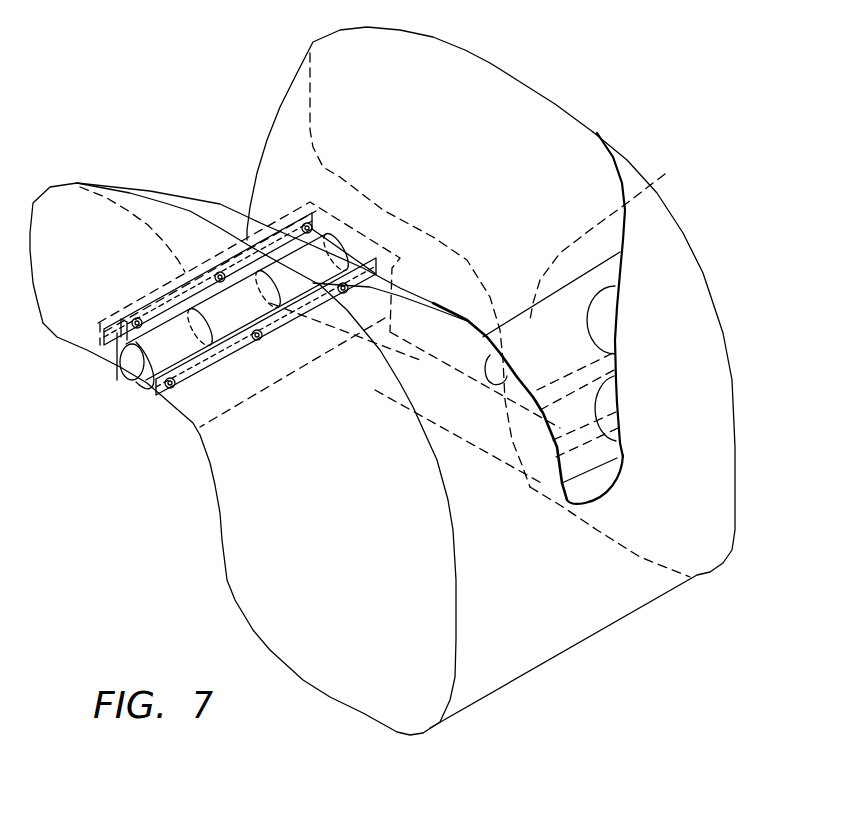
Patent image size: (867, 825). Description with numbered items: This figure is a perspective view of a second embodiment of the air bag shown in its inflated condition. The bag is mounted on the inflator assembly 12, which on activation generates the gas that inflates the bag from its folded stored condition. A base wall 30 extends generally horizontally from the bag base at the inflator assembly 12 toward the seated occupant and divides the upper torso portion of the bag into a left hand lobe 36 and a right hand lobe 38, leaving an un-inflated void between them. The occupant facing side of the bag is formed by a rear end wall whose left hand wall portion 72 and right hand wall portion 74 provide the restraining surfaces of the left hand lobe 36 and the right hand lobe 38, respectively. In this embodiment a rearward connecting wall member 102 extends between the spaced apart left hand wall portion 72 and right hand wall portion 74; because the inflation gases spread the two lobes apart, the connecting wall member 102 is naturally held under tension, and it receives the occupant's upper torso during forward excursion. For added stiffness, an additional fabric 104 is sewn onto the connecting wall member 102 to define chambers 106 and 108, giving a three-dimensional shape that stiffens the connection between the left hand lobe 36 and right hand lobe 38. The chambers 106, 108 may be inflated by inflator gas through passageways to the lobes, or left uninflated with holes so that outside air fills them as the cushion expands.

The inflator assembly 12 is at (146, 399).
The base wall 30 is at (483, 413).
The left hand lobe 36 is at (472, 358).
The right hand lobe 38 is at (573, 187).
The left hand wall portion 72 is at (462, 463).
The right hand wall portion 74 is at (680, 277).
The rearward connecting wall member 102 is at (596, 333).
The additional fabric 104 is at (665, 174).
The inflated air chamber 106 is at (502, 353).
The inflated air chamber 108 is at (553, 470).